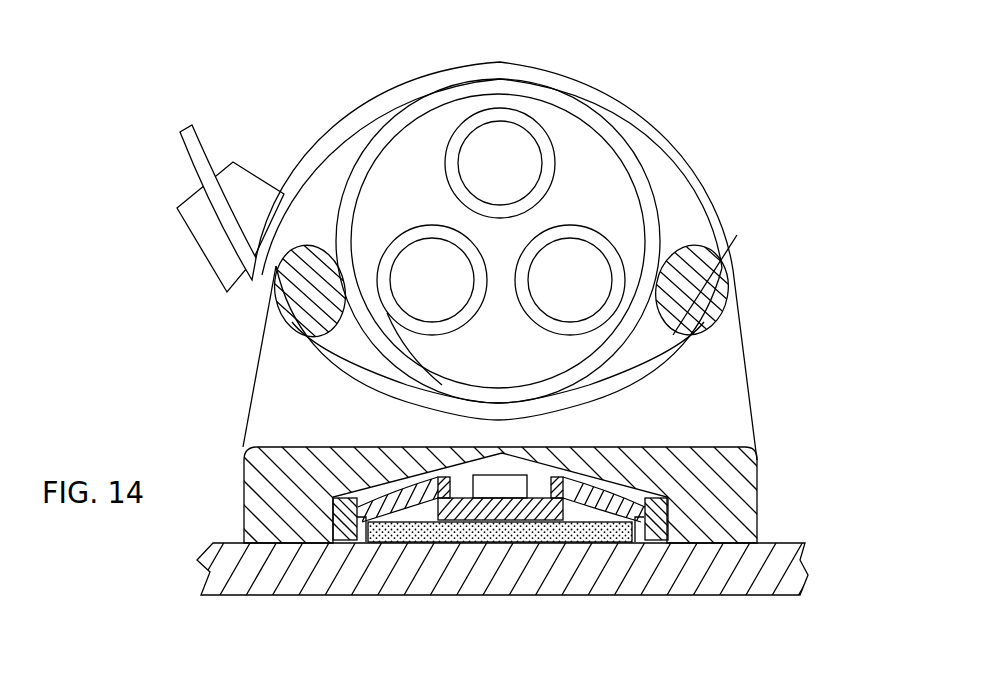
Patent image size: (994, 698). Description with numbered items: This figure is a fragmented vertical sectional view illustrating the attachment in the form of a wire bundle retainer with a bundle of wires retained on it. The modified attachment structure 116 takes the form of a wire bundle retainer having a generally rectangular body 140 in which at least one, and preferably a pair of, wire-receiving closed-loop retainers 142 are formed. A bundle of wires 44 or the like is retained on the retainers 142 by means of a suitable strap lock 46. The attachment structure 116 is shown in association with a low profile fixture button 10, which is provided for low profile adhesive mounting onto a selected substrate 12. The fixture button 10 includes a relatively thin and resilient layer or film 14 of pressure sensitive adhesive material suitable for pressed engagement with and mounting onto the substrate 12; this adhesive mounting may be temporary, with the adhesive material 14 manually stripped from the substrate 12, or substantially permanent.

The low profile fixture button 10 is at (533, 472).
The substrate 12 is at (235, 590).
The layer of pressure sensitive adhesive material 14 is at (447, 530).
The bundle of wires 44 is at (560, 157).
The strap lock 46 is at (256, 196).
The modified attachment structure 116 is at (222, 397).
The body 140 is at (752, 490).
The wire-receiving closed-loop retainers 142 is at (292, 290).